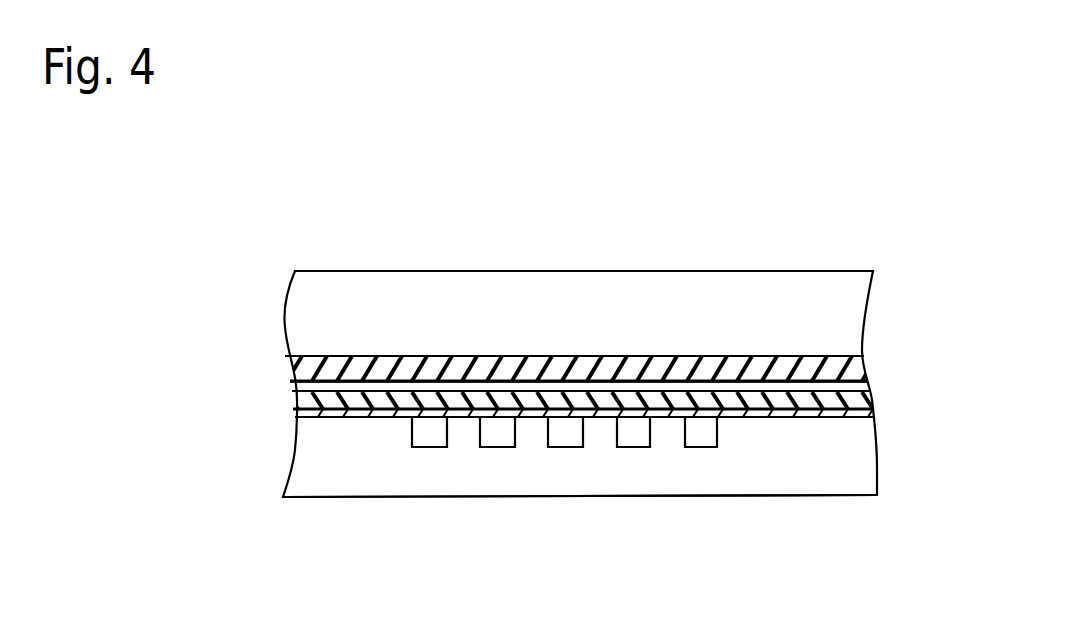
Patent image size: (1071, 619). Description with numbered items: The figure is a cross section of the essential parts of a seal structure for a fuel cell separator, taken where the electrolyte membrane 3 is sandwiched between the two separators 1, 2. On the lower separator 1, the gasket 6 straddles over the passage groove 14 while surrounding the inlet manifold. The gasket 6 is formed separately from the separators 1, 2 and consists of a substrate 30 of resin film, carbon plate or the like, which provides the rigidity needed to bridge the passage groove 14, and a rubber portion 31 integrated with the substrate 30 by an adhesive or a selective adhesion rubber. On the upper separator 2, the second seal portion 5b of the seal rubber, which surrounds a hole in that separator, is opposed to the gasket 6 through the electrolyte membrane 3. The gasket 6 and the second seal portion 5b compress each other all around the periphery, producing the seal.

The separator 1 is at (850, 468).
The separator 2 is at (455, 285).
The electrolyte membrane 3 is at (867, 384).
The second seal portion 5b is at (717, 360).
The gasket 6 is at (524, 407).
The substrate 30 is at (297, 411).
The rubber portion 31 is at (296, 398).
The passage groove 14 is at (635, 435).